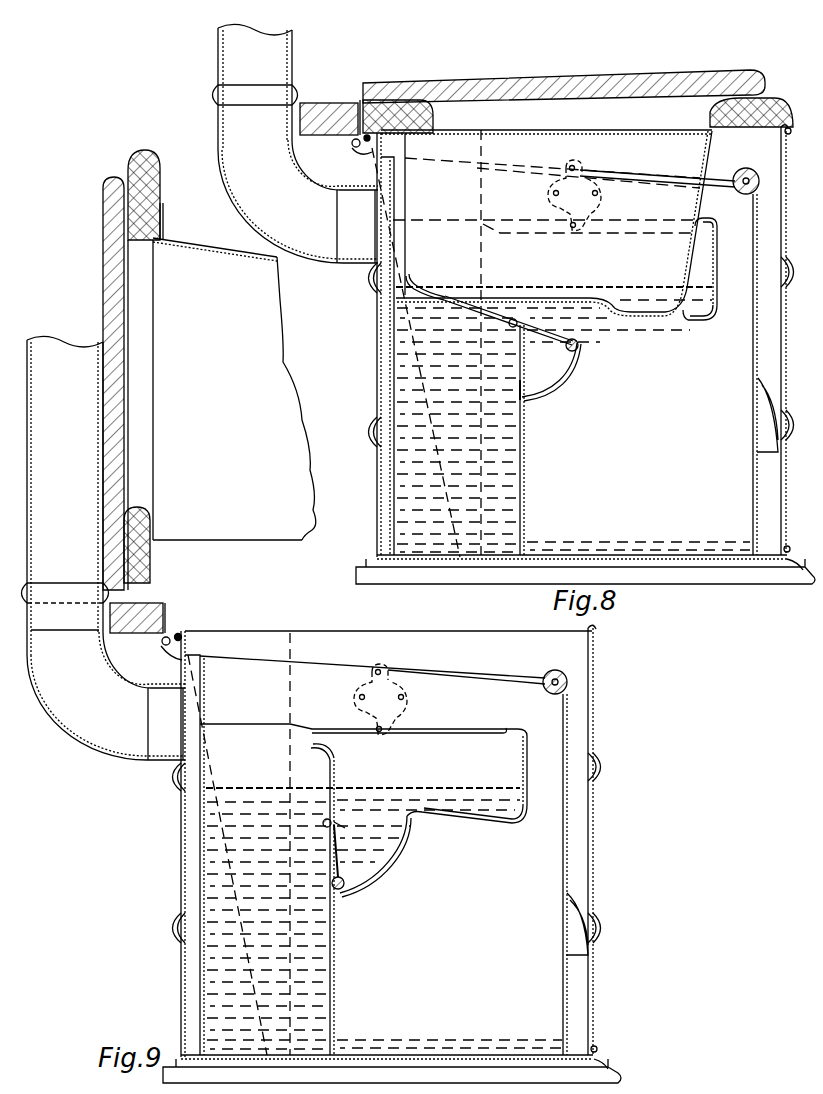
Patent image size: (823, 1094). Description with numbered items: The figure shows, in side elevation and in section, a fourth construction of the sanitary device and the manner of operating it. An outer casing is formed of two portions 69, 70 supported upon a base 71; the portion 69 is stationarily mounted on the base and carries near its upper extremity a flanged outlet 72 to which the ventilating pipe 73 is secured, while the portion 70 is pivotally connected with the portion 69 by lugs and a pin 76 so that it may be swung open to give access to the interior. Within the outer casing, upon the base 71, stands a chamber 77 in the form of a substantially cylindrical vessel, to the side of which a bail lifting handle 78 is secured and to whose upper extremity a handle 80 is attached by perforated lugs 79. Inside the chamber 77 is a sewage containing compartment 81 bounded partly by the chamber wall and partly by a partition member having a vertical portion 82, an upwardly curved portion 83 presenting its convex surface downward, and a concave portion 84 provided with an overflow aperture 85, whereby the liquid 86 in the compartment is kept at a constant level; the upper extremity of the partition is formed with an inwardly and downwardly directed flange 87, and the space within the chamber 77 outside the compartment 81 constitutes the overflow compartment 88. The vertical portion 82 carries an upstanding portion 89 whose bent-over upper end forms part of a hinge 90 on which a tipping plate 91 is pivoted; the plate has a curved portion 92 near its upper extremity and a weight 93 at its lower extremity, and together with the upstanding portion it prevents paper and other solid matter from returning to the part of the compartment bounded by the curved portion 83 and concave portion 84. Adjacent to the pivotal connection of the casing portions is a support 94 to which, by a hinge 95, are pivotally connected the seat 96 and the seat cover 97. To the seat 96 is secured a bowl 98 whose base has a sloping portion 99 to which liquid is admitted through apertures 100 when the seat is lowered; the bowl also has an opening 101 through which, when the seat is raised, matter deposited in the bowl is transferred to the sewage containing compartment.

In FIG. 8, the outer casing portion 69 is at (377, 348).
In FIG. 9, the outer casing portion 69 is at (181, 848).
In FIG. 8, the outer casing portion 70 is at (779, 351).
In FIG. 9, the outer casing portion 70 is at (591, 822).
In FIG. 8, the base 71 is at (793, 570).
In FIG. 9, the base 71 is at (607, 1060).
In FIG. 8, the flanged outlet 72 is at (352, 200).
In FIG. 9, the flanged outlet 72 is at (157, 722).
In FIG. 8, the ventilating pipe 73 is at (282, 92).
In FIG. 9, the ventilating pipe 73 is at (61, 575).
In FIG. 8, the pin 76 is at (352, 145).
In FIG. 9, the pin 76 is at (162, 645).
In FIG. 8, the chamber 77 is at (753, 375).
In FIG. 9, the chamber 77 is at (575, 868).
In FIG. 8, the bail lifting handle 78 is at (764, 440).
In FIG. 9, the bail lifting handle 78 is at (578, 926).
In FIG. 8, the perforated lugs 79 is at (567, 182).
In FIG. 9, the perforated lugs 79 is at (397, 655).
In FIG. 8, the handle 80 is at (740, 172).
In FIG. 9, the handle 80 is at (503, 677).
In FIG. 8, the sewage containing compartment 81 is at (397, 275).
In FIG. 9, the sewage containing compartment 81 is at (206, 778).
In FIG. 8, the vertical portion 82 is at (526, 490).
In FIG. 9, the vertical portion 82 is at (336, 1008).
In FIG. 8, the upwardly curved portion 83 is at (566, 381).
In FIG. 9, the upwardly curved portion 83 is at (402, 825).
In FIG. 8, the concave portion 84 is at (705, 320).
In FIG. 9, the concave portion 84 is at (498, 823).
In FIG. 8, the overflow aperture 85 is at (718, 281).
In FIG. 9, the overflow aperture 85 is at (522, 780).
In FIG. 8, the liquid 86 is at (405, 460).
In FIG. 9, the liquid 86 is at (217, 965).
In FIG. 8, the flange 87 is at (712, 228).
In FIG. 9, the flange 87 is at (452, 728).
In FIG. 8, the overflow compartment 88 is at (677, 530).
In FIG. 9, the overflow compartment 88 is at (537, 1007).
In FIG. 8, the upstanding portion 89 is at (524, 384).
In FIG. 9, the upstanding portion 89 is at (338, 827).
In FIG. 8, the hinge 90 is at (512, 319).
In FIG. 9, the hinge 90 is at (330, 820).
In FIG. 8, the tipping plate 91 is at (538, 328).
In FIG. 9, the tipping plate 91 is at (338, 855).
In FIG. 8, the curved portion 92 is at (447, 300).
In FIG. 9, the curved portion 92 is at (330, 754).
In FIG. 8, the weight 93 is at (580, 348).
In FIG. 9, the weight 93 is at (344, 890).
In FIG. 8, the support 94 is at (322, 110).
In FIG. 9, the support 94 is at (165, 611).
In FIG. 8, the hinge 95 is at (372, 92).
In FIG. 9, the hinge 95 is at (138, 594).
In FIG. 8, the seat 96 is at (763, 107).
In FIG. 9, the seat 96 is at (152, 190).
In FIG. 8, the seat cover 97 is at (690, 80).
In FIG. 9, the seat cover 97 is at (113, 230).
In FIG. 9, the bowl 98 is at (230, 252).
In FIG. 8, the sloping portion 99 is at (615, 306).
In FIG. 9, the sloping portion 99 is at (286, 535).
In FIG. 8, the apertures 100 is at (657, 318).
In FIG. 8, the opening 101 is at (415, 238).
In FIG. 9, the opening 101 is at (235, 541).